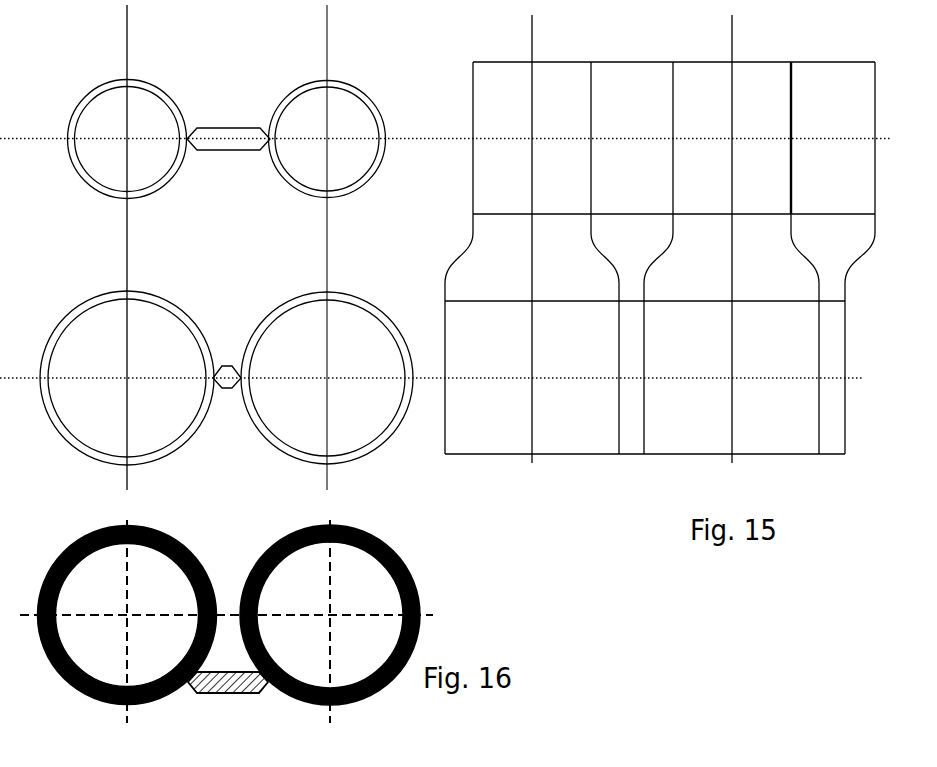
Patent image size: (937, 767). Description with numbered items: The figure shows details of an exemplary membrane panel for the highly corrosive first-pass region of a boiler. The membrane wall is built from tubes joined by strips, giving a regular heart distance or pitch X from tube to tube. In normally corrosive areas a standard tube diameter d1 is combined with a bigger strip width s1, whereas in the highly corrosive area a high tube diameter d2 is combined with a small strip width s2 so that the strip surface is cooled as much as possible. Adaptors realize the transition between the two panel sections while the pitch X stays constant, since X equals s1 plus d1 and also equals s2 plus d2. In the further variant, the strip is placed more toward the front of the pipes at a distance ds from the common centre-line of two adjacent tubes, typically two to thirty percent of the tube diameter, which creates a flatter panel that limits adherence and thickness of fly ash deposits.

In FIG. 15, the pitch X is at (127, 15).
In FIG. 15, the tube diameter d1 is at (187, 139).
In FIG. 15, the strip width s1 is at (270, 139).
In FIG. 15, the tube diameter d2 is at (40, 378).
In FIG. 15, the strip width s2 is at (241, 378).
In FIG. 16, the distance from common centerline of two adjacent tubes ds is at (230, 670).